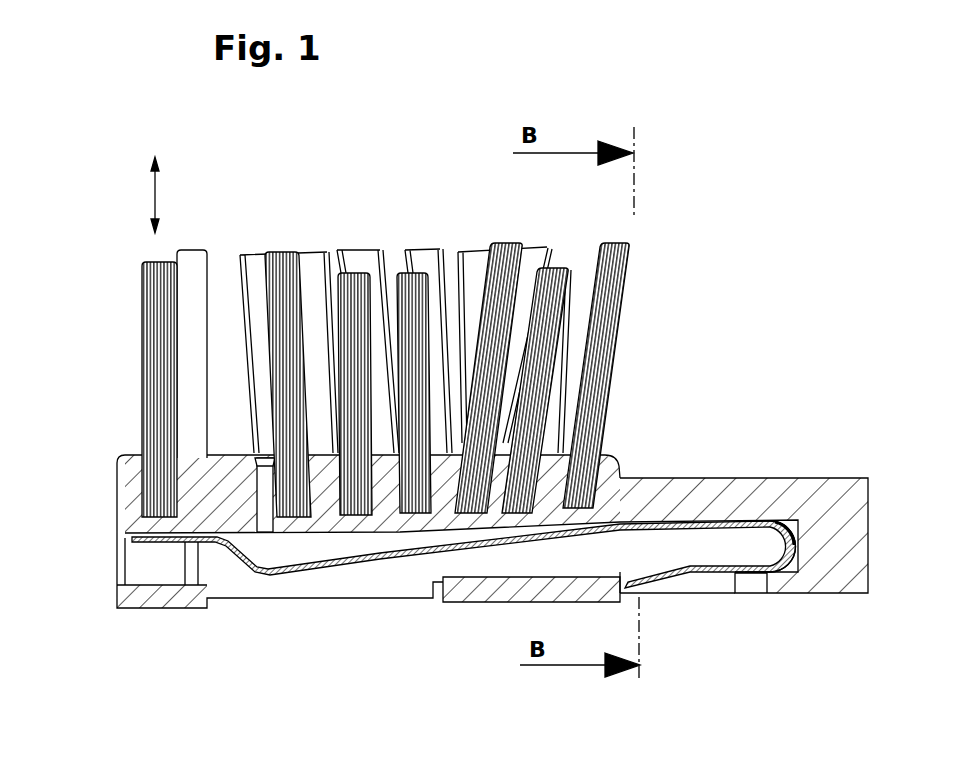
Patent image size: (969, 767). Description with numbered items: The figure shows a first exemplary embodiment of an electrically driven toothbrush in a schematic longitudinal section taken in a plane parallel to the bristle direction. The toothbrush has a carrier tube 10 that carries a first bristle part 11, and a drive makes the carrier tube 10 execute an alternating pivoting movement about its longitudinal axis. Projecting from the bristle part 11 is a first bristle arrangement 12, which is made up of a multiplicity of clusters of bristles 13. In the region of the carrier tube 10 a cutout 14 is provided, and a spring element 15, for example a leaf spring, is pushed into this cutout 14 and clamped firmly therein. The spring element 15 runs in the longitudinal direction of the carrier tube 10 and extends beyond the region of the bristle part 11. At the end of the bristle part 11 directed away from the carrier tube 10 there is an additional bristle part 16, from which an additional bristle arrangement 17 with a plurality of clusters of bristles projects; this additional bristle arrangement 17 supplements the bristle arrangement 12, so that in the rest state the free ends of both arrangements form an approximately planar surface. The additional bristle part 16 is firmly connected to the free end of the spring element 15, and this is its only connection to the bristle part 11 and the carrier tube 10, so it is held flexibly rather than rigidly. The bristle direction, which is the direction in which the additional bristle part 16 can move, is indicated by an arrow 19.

The carrier tube 10 is at (814, 485).
The first bristle part 11 is at (612, 465).
The first bristle arrangement 12 is at (540, 340).
The clusters of bristles 13 is at (420, 252).
The cutout 14 is at (758, 552).
The spring element 15 is at (352, 558).
The additional bristle part 16 is at (130, 490).
The additional bristle arrangement 17 is at (175, 355).
The arrow 19 is at (160, 193).